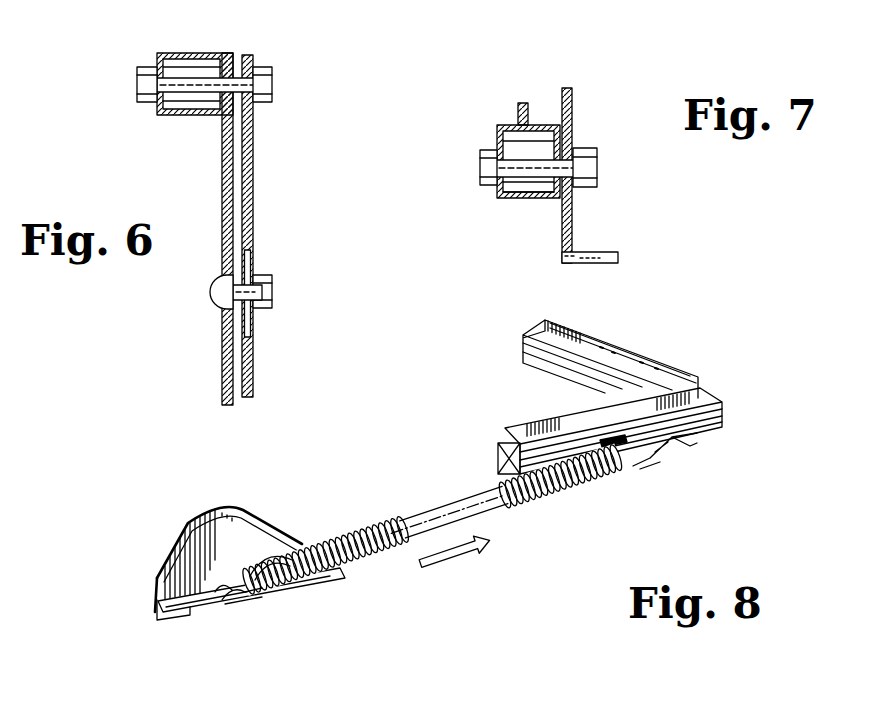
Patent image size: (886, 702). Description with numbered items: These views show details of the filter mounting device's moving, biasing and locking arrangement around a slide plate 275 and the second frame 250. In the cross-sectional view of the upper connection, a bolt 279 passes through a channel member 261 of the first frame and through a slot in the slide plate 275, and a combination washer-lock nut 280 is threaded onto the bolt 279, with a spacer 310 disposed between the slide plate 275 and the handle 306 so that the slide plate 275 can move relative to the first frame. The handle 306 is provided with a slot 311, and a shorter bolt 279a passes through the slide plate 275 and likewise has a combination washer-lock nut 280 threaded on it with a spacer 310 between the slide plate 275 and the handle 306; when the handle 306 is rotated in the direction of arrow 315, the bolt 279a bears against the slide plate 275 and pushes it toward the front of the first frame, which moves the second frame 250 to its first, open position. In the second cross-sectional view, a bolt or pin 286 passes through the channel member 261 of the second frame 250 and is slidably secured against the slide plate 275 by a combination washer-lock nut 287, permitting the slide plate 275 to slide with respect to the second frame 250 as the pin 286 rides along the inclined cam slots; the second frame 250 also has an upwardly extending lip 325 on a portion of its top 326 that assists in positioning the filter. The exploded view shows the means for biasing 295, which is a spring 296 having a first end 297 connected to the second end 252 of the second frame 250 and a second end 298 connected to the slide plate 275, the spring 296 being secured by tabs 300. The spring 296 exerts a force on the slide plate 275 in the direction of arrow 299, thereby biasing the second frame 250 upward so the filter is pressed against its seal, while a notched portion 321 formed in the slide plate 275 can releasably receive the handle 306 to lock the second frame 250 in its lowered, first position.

In FIG. 6, the second frame 250 is at (163, 53).
In FIG. 7, the second frame 250 is at (534, 206).
In FIG. 8, the second frame 250 is at (652, 347).
In FIG. 8, the second end of second frame 252 is at (724, 394).
In FIG. 7, the channel member 261 is at (511, 200).
In FIG. 6, the slide plate 275 is at (222, 380).
In FIG. 7, the slide plate 275 is at (573, 244).
In FIG. 8, the slide plate 275 is at (238, 505).
In FIG. 6, the bolt 279 is at (138, 92).
In FIG. 6, the shorter bolt 279a is at (212, 301).
In FIG. 6, the combination washer-lock nut 280 is at (272, 85).
In FIG. 7, the bolt or pin 286 is at (481, 185).
In FIG. 7, the combination washer-lock nut 287 is at (598, 158).
In FIG. 8, the means for biasing 295 is at (370, 560).
In FIG. 8, the spring 296 is at (388, 520).
In FIG. 8, the first end of spring 297 is at (613, 494).
In FIG. 8, the second end of spring 298 is at (266, 536).
In FIG. 8, the arrow 299 is at (458, 563).
In FIG. 8, the tabs 300 is at (222, 601).
In FIG. 6, the handle 306 is at (254, 183).
In FIG. 6, the spacer 310 is at (246, 56).
In FIG. 6, the slot 311 is at (249, 262).
In FIG. 7, the arrow 315 is at (602, 22).
In FIG. 8, the notched portion 321 is at (246, 597).
In FIG. 7, the upwardly extending lip 325 is at (521, 104).
In FIG. 7, the top of second frame 326 is at (500, 130).
In FIG. 8, the top of second frame 326 is at (523, 330).